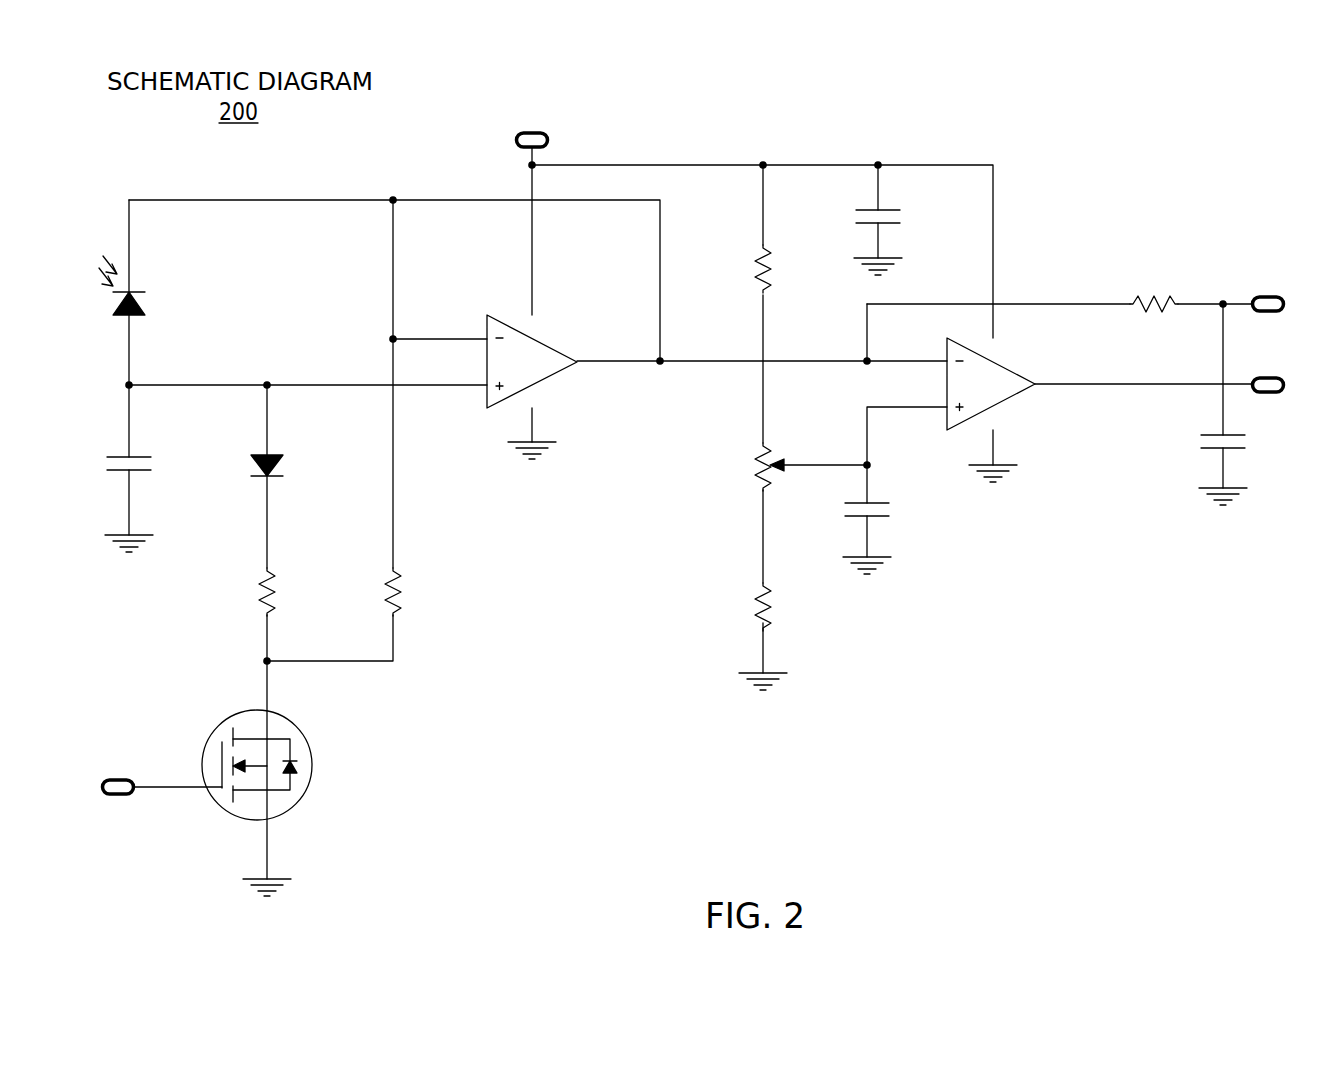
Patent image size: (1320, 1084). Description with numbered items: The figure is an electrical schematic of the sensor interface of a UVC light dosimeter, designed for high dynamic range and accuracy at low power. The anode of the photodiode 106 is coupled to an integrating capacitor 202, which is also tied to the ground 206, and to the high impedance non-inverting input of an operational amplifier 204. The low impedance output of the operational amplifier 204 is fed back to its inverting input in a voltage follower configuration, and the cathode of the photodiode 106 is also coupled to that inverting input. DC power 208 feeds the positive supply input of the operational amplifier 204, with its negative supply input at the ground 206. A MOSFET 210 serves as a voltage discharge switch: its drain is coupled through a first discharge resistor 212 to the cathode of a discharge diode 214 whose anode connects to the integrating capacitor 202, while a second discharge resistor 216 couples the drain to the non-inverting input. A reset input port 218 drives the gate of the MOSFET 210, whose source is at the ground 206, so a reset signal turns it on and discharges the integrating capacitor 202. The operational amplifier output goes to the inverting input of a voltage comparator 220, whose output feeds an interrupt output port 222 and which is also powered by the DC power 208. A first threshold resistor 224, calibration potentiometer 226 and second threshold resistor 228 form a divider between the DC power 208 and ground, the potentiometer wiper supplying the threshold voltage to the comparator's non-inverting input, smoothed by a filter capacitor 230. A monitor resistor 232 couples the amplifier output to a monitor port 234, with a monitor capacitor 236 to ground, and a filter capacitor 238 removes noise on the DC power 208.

The photodiode 106 is at (142, 291).
The integrating capacitor 202 is at (146, 456).
The operational amplifier 204 is at (549, 346).
The ground 206 is at (146, 532).
The DC power 208 is at (535, 132).
The MOSFET 210 is at (302, 734).
The first discharge resistor 212 is at (282, 575).
The discharge diode 214 is at (284, 449).
The second discharge resistor 216 is at (410, 598).
The reset input port 218 is at (114, 780).
The voltage comparator 220 is at (1017, 372).
The interrupt output port 222 is at (1264, 377).
The first threshold resistor 224 is at (752, 270).
The calibration potentiometer 226 is at (778, 448).
The second threshold resistor 228 is at (774, 612).
The filter capacitor 230 is at (878, 500).
The monitor resistor 232 is at (1138, 295).
The monitor port 234 is at (1266, 296).
The monitor capacitor 236 is at (1206, 434).
The filter capacitor 238 is at (892, 221).